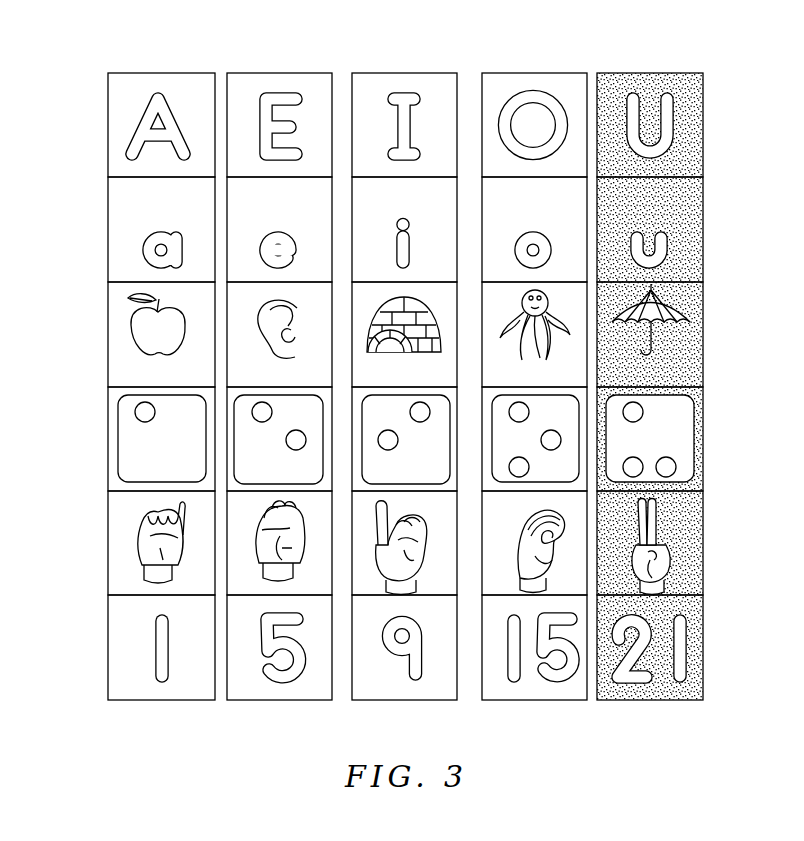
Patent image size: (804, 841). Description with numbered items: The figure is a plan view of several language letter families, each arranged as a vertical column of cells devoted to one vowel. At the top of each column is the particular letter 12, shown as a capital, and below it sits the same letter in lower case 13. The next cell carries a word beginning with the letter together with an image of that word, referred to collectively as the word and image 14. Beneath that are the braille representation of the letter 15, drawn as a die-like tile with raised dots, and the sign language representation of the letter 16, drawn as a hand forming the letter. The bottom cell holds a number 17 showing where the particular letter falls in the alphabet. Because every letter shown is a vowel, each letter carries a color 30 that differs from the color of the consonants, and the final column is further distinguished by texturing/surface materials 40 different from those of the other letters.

The particular letter 12 is at (366, 88).
The same letter in lower case 13 is at (108, 226).
The word and image 14 is at (108, 336).
The braille representation of the letter 15 is at (108, 432).
The sign language representation of the letter 16 is at (108, 538).
The number 17 is at (108, 640).
The color 30 is at (176, 106).
The texturing/surface materials 40 is at (683, 571).